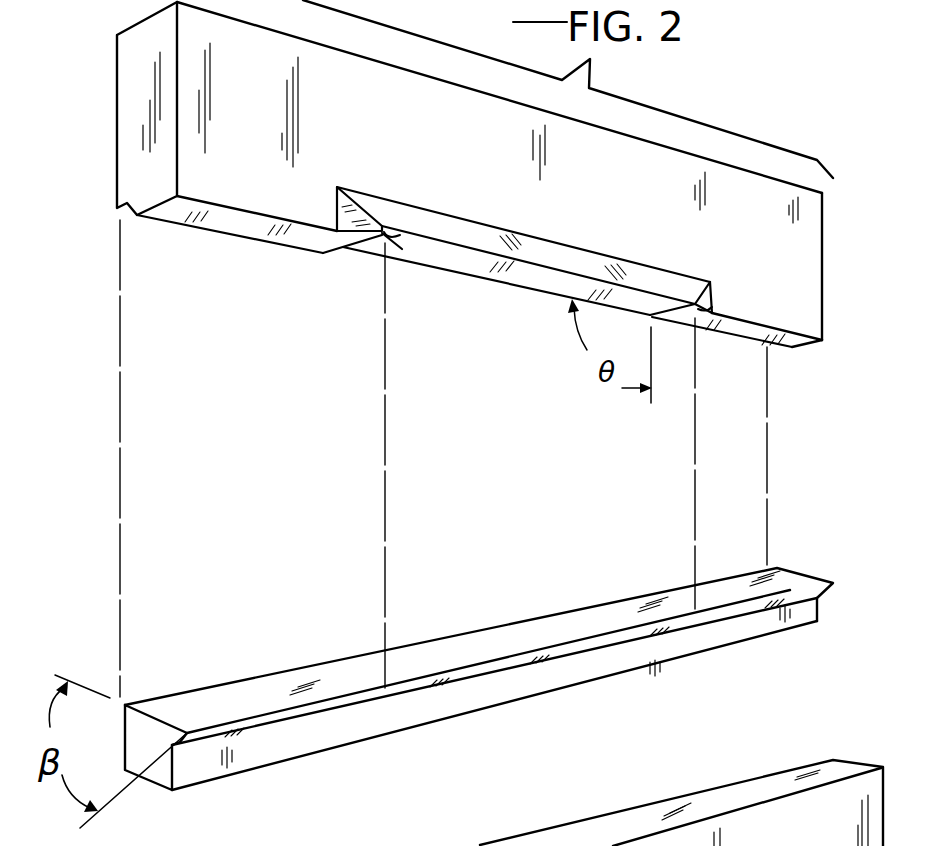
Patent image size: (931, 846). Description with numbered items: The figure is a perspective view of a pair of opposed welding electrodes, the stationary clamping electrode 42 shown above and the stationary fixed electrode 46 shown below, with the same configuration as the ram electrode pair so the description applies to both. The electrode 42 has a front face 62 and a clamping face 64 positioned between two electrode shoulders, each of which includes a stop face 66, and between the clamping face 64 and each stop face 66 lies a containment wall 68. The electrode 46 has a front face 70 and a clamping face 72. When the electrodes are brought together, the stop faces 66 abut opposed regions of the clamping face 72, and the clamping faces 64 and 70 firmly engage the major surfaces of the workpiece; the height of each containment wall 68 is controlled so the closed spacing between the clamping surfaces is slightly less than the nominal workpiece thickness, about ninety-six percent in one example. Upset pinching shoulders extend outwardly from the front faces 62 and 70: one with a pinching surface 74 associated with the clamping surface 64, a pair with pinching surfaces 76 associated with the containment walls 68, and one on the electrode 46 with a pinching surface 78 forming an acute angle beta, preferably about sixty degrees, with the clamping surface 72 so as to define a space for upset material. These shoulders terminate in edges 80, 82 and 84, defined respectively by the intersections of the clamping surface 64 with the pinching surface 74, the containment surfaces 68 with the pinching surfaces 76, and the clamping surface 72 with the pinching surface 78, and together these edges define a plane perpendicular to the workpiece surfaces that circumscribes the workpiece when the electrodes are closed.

The stationary clamping electrode 42 is at (106, 88).
The stationary fixed electrode 46 is at (479, 707).
The front face 62 is at (382, 138).
The clamping face 64 is at (530, 276).
The stop face 66 is at (236, 221).
The containment wall 68 is at (678, 273).
The front face 70 is at (447, 702).
The clamping face 72 is at (533, 640).
The pinching surface 74 is at (535, 245).
The pinching surface 76 is at (360, 215).
The pinching surface 78 is at (517, 665).
The edge 80 is at (577, 270).
The edge 82 is at (397, 232).
The edge 84 is at (593, 637).